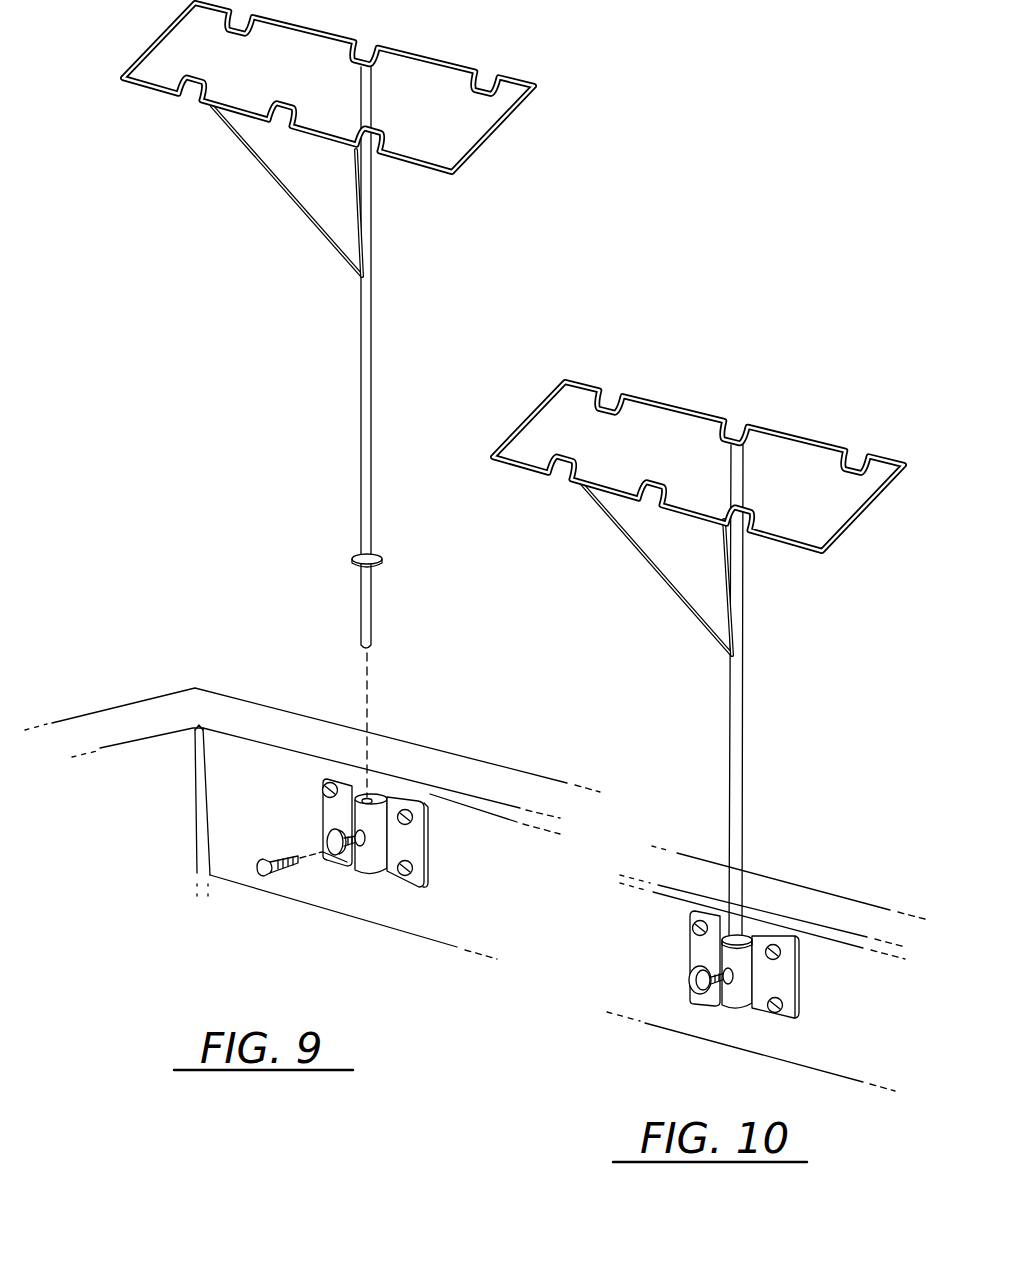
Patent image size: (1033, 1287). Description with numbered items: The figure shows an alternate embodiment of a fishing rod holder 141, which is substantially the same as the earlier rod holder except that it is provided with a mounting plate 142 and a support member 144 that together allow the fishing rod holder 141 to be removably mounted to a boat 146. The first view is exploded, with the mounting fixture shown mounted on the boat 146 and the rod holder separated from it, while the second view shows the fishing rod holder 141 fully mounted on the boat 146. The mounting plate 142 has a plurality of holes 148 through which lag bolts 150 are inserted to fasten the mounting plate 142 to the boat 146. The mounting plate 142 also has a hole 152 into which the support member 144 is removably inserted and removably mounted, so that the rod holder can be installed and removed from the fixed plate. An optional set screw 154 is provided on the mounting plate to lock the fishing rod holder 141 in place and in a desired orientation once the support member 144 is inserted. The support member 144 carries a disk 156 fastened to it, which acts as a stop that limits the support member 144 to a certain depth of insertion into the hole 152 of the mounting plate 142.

In FIG. 9, the fishing rod holder 141 is at (538, 108).
In FIG. 10, the fishing rod holder 141 is at (778, 422).
In FIG. 9, the mounting plate 142 is at (432, 833).
In FIG. 10, the mounting plate 142 is at (820, 950).
In FIG. 9, the support member 144 is at (375, 368).
In FIG. 10, the support member 144 is at (743, 750).
In FIG. 9, the boat 146 is at (510, 838).
In FIG. 10, the boat 146 is at (775, 1047).
In FIG. 9, the holes 148 is at (328, 853).
In FIG. 9, the lag bolts 150 is at (325, 783).
In FIG. 10, the lag bolts 150 is at (788, 1008).
In FIG. 9, the hole 152 is at (380, 797).
In FIG. 9, the set screw 154 is at (338, 857).
In FIG. 10, the set screw 154 is at (703, 995).
In FIG. 9, the disk 156 is at (383, 560).
In FIG. 10, the disk 156 is at (752, 938).